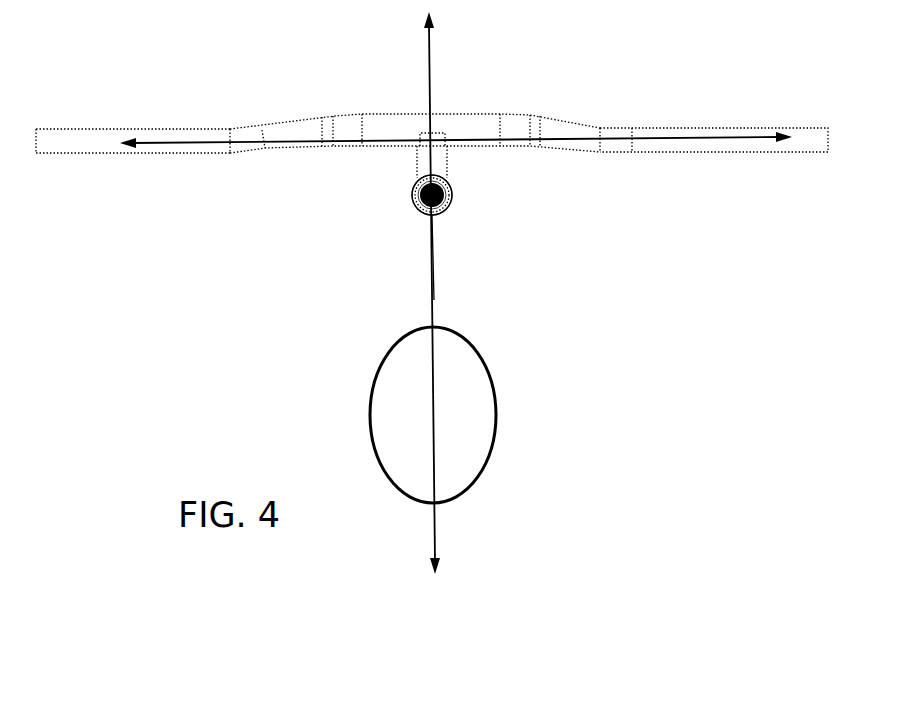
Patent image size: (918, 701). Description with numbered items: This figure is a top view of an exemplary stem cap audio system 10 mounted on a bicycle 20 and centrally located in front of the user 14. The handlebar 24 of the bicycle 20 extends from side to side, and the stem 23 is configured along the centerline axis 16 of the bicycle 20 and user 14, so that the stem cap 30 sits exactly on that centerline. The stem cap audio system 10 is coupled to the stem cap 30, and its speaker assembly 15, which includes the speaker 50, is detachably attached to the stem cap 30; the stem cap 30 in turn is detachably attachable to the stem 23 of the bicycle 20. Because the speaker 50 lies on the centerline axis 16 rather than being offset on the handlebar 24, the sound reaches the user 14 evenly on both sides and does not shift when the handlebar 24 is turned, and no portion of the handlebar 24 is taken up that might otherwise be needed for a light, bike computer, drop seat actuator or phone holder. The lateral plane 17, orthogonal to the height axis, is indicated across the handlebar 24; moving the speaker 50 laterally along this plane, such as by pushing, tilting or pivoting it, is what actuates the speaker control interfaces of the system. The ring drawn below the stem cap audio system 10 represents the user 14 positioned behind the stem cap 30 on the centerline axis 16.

The stem cap audio system 10 is at (443, 178).
The user 14 is at (445, 375).
The speaker assembly 15 is at (436, 212).
The centerline axis 16 is at (431, 60).
The lateral plane 17 is at (722, 140).
The bicycle 20 is at (212, 140).
The stem 23 is at (420, 180).
The handlebar 24 is at (587, 140).
The stem cap 30 is at (414, 201).
The speaker 50 is at (447, 193).